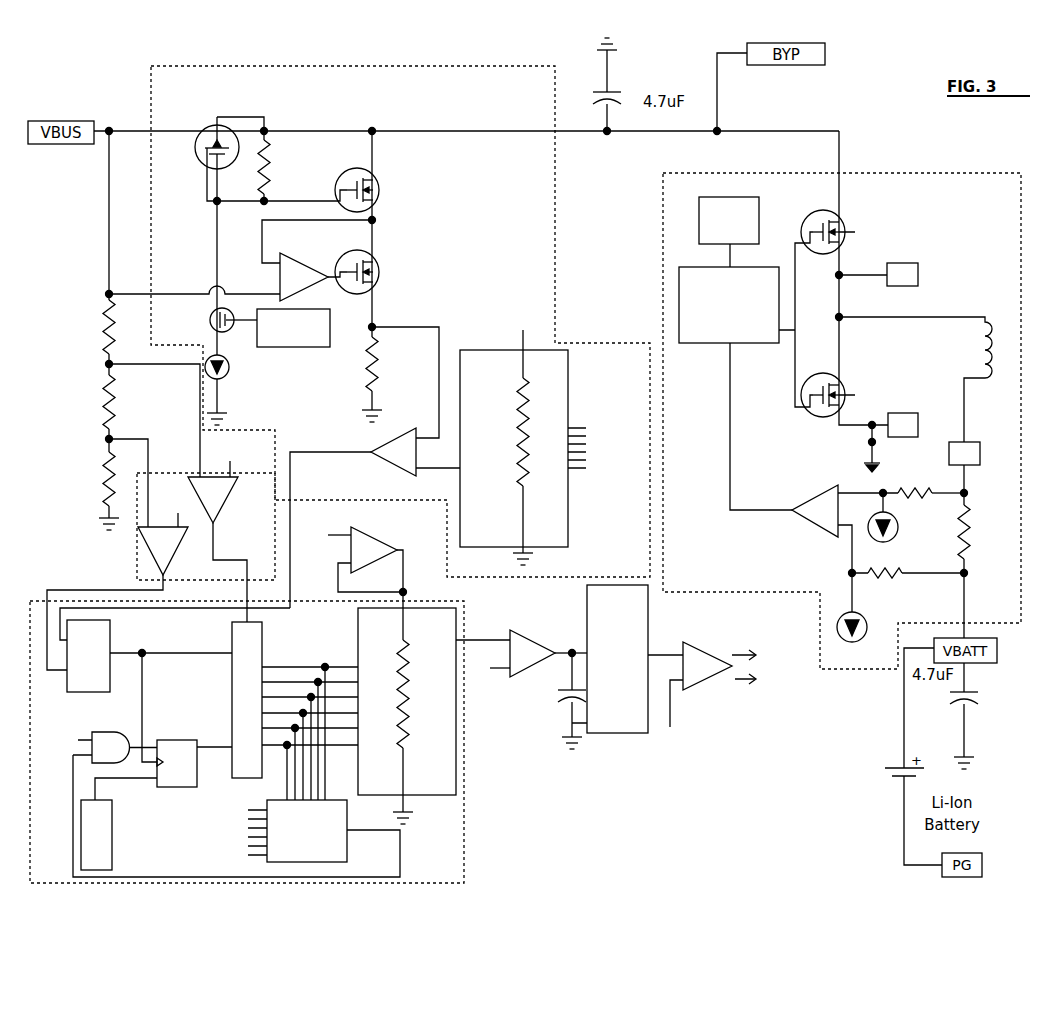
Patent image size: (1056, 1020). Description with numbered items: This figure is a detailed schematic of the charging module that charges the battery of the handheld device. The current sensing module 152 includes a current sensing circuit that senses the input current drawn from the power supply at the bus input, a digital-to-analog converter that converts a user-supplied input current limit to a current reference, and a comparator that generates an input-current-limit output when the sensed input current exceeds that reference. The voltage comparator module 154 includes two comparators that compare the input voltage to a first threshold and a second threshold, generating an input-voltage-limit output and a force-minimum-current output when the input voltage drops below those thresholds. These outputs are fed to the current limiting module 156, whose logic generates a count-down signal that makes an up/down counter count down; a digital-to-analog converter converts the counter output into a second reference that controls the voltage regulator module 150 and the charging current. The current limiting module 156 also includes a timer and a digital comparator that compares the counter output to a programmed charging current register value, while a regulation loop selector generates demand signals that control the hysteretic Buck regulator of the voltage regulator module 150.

The voltage regulator module 150 is at (923, 173).
The current sensing module 152 is at (555, 222).
The voltage comparator module 154 is at (168, 472).
The current limiting module 156 is at (465, 838).